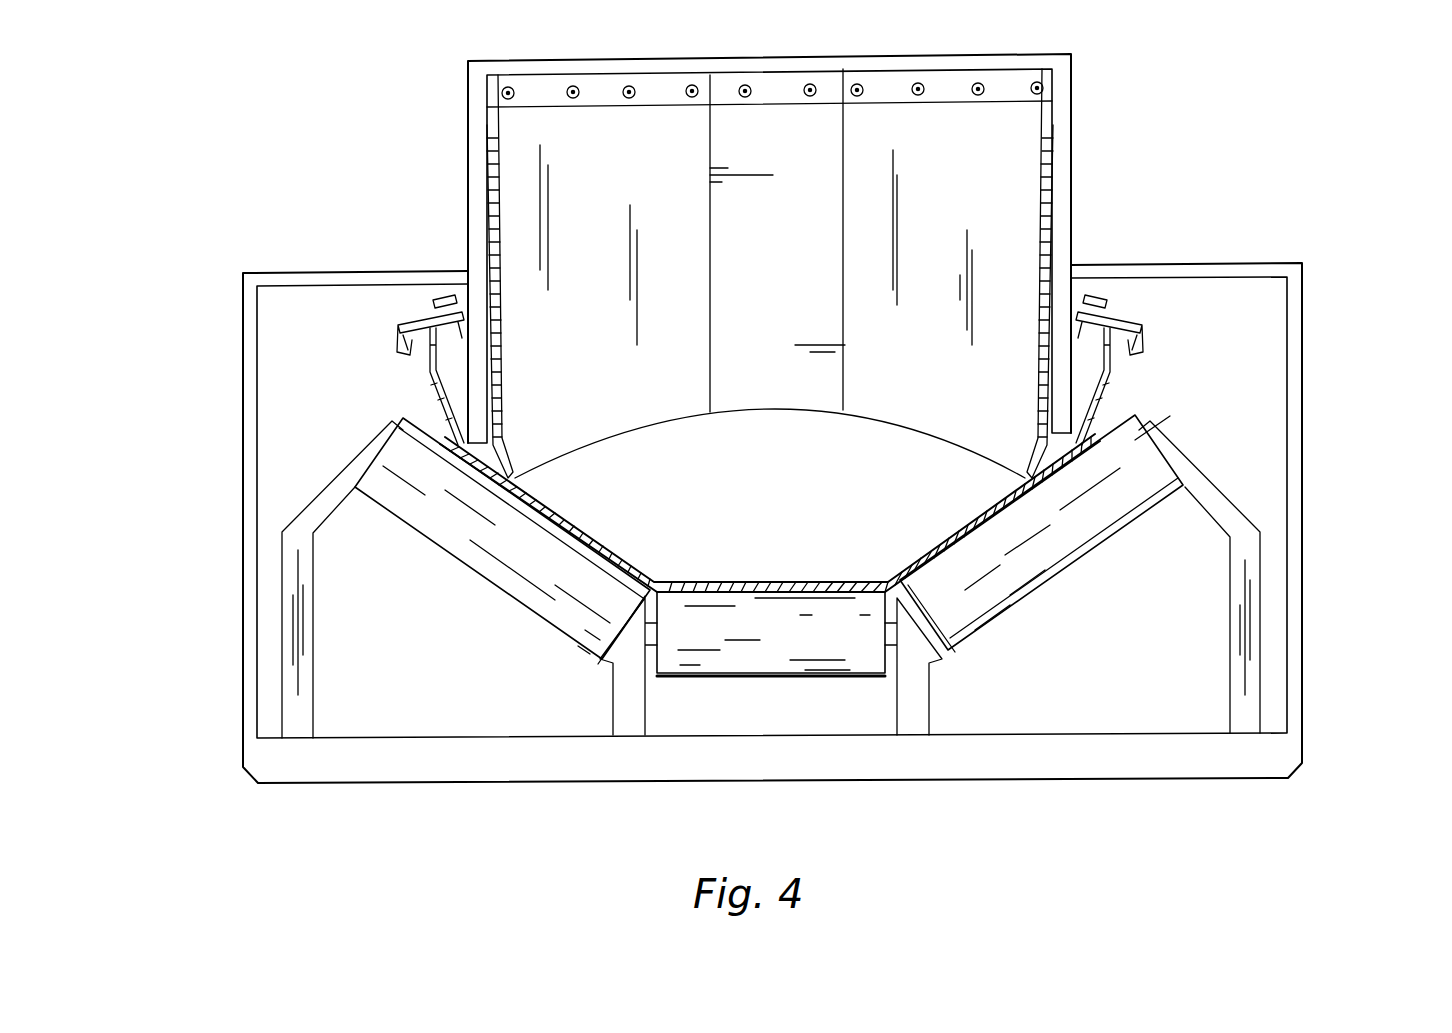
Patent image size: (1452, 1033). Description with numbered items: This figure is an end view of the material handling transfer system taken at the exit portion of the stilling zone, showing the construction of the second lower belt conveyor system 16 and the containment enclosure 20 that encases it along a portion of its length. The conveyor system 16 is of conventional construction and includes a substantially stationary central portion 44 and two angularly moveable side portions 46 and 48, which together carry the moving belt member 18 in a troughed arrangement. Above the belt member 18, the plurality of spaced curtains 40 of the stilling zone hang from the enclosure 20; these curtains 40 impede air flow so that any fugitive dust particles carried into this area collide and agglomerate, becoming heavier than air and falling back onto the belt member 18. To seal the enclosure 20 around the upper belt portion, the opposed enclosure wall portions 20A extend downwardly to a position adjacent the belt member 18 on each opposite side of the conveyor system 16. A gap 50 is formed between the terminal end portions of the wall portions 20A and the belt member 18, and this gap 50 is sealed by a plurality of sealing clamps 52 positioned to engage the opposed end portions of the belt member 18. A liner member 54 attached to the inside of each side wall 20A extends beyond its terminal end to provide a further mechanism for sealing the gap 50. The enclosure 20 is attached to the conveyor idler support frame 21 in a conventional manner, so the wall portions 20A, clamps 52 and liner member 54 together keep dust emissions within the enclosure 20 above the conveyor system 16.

The second lower belt conveyor system 16 is at (966, 711).
The belt member 18 is at (580, 532).
The containment enclosure 20 is at (1076, 150).
The enclosure wall portions 20A is at (462, 364).
The conveyor idler support frame 21 is at (243, 383).
The spaced curtains 40 is at (634, 184).
The central portion 44 is at (776, 637).
The side portion 46 is at (472, 533).
The side portion 48 is at (1060, 520).
The gap 50 is at (503, 462).
The sealing clamps 52 is at (418, 382).
The liner member 54 is at (505, 432).